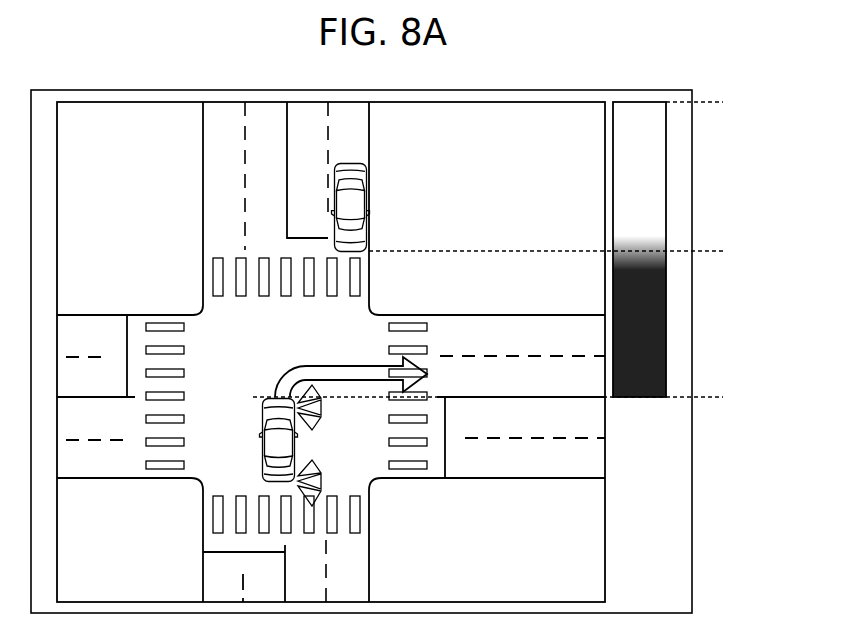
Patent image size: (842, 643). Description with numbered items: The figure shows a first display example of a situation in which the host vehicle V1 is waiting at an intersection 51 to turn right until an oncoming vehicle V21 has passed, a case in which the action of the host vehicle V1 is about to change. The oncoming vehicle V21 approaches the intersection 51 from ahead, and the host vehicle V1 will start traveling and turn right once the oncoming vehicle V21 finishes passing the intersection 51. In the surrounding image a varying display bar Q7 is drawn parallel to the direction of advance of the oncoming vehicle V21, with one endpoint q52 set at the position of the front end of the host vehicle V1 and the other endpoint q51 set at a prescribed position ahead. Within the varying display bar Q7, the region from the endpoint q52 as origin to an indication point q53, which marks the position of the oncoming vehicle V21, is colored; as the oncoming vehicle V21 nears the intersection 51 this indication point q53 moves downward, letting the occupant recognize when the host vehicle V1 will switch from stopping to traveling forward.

The intersection 51 is at (348, 337).
The host vehicle V1 is at (272, 441).
The oncoming vehicle V21 is at (355, 200).
The varying display bar Q7 is at (666, 192).
The endpoint q51 is at (722, 105).
The indication point q53 is at (574, 251).
The endpoint q52 is at (516, 396).